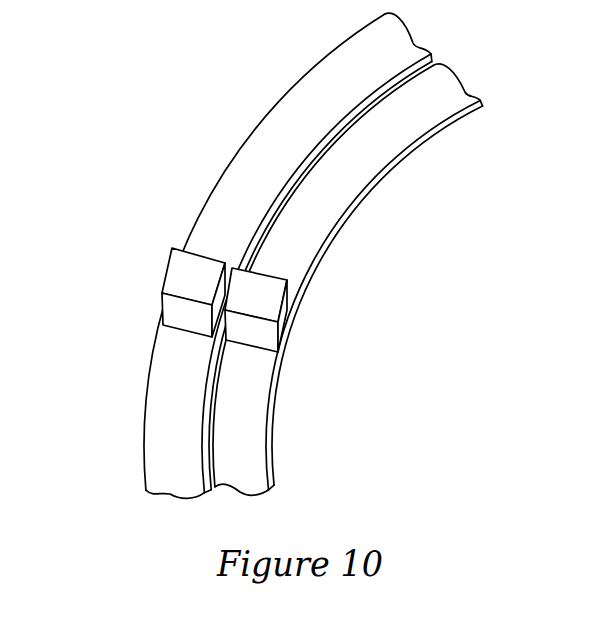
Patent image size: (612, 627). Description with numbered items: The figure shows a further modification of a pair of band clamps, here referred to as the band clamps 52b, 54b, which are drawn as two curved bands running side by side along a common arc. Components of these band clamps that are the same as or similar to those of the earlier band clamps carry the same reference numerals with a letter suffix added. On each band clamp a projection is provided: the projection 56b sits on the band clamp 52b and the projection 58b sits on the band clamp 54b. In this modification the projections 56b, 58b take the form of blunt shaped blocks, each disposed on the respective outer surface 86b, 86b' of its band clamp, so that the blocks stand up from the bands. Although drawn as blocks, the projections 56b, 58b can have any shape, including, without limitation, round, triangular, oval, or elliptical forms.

The band clamp 52b is at (277, 122).
The band clamp 54b is at (402, 154).
The projection 56b is at (177, 280).
The projection 58b is at (268, 297).
The outer surface 86b is at (109, 396).
The outer surface 86b' is at (317, 426).